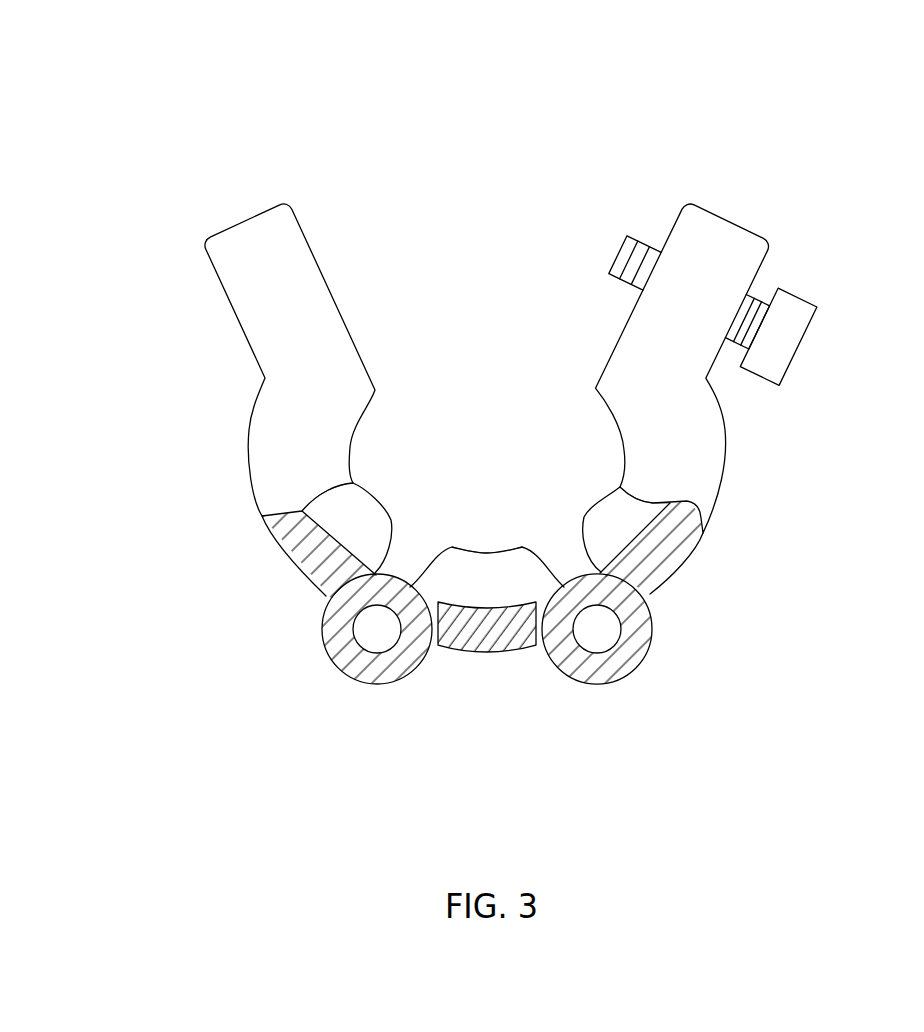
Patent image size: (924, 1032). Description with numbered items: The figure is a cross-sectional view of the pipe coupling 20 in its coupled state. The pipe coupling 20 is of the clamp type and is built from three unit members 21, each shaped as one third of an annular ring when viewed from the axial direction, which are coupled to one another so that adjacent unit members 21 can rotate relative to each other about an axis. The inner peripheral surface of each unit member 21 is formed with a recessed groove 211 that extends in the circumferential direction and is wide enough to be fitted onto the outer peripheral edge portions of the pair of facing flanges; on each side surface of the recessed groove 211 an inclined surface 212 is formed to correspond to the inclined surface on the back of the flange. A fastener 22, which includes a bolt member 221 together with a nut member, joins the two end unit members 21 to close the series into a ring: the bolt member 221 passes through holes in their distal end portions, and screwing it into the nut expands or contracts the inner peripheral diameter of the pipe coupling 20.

The pipe coupling 20 is at (153, 96).
The unit member 21 is at (366, 360).
The recessed groove 211 is at (372, 503).
The inclined surface 212 is at (340, 523).
The fastener 22 is at (600, 220).
The bolt member 221 is at (802, 347).